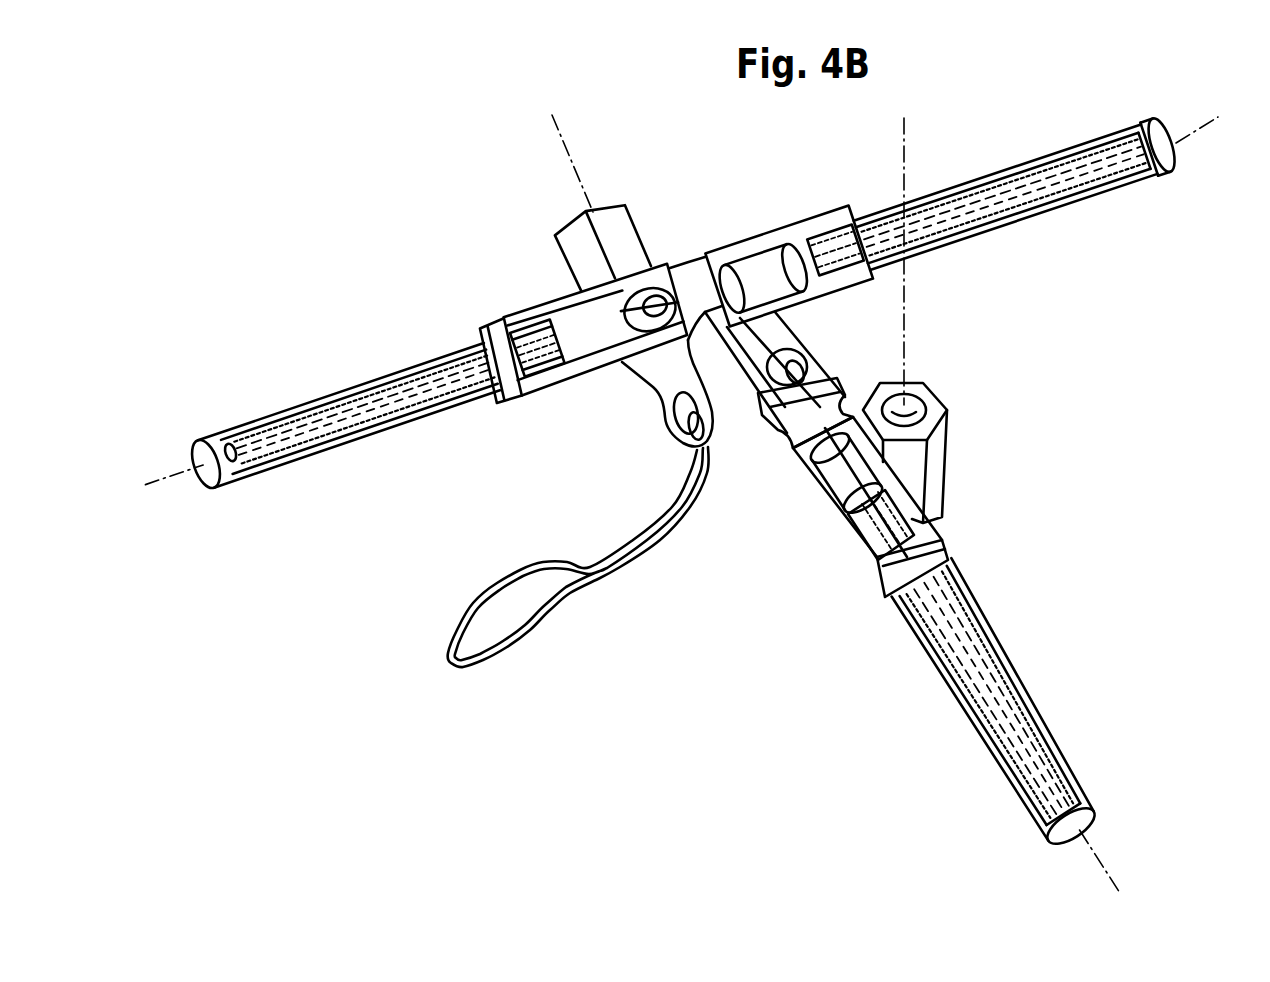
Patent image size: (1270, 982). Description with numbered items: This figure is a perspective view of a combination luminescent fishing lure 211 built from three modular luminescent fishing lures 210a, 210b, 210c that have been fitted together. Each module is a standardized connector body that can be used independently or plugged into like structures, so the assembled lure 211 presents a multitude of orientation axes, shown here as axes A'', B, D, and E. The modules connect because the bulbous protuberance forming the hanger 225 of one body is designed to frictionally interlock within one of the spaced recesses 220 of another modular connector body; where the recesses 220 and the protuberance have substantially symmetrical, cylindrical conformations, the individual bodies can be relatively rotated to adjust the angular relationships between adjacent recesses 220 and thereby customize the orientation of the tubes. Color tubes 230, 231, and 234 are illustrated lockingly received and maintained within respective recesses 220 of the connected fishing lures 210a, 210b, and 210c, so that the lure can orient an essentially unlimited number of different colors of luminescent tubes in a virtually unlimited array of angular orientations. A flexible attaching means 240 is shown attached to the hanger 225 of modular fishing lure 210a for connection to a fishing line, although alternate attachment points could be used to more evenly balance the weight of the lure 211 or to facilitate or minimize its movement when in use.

The modular luminescent fishing lure 210a is at (560, 268).
The modular luminescent fishing lure 210b is at (820, 205).
The modular luminescent fishing lure 210c is at (957, 482).
The combination luminescent fishing lure 211 is at (700, 249).
The spaced recesses 220 is at (913, 406).
The hanger 225 is at (662, 426).
The color tube 230 is at (334, 454).
The color tube 231 is at (929, 664).
The color tube 234 is at (1080, 209).
The flexible attaching means 240 is at (589, 603).
The orientation axis E is at (571, 135).
The orientation axis D is at (907, 128).
The orientation axis A'' is at (1197, 96).
The orientation axis B is at (1101, 853).